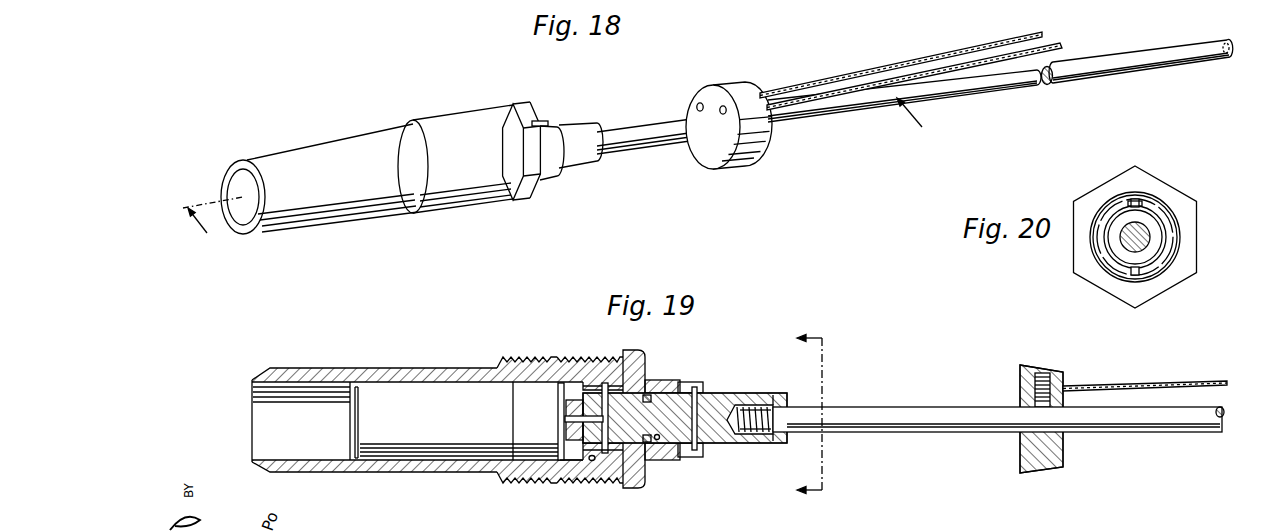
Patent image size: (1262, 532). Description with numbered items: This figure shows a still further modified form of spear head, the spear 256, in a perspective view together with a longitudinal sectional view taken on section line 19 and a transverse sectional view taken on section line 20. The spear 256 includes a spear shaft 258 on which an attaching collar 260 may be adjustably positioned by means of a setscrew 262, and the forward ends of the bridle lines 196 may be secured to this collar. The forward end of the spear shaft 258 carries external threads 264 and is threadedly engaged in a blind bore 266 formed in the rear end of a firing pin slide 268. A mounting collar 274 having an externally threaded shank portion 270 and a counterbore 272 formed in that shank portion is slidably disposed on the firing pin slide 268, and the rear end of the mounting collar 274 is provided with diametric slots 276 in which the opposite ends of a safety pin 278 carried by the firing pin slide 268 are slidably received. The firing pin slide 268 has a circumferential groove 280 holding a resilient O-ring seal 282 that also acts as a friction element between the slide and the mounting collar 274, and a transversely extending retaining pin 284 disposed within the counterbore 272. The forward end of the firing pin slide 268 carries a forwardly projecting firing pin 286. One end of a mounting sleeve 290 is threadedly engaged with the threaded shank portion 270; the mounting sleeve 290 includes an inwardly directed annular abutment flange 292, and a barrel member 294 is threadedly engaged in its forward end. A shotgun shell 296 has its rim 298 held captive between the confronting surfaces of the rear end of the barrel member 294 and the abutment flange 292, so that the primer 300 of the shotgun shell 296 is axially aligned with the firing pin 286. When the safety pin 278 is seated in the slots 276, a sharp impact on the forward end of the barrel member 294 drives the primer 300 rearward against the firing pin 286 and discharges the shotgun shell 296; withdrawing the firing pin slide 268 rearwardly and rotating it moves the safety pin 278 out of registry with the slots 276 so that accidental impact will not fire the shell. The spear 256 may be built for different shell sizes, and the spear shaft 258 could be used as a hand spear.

In FIG. 18, the section line 19 is at (565, 178).
In FIG. 19, the section line 20 is at (831, 415).
In FIG. 18, the bridle lines 196 is at (833, 88).
In FIG. 19, the bridle lines 196 is at (1142, 386).
In FIG. 18, the spear 256 is at (630, 113).
In FIG. 18, the spear shaft 258 is at (823, 115).
In FIG. 19, the spear shaft 258 is at (943, 426).
In FIG. 20, the spear shaft 258 is at (1125, 245).
In FIG. 18, the attaching collar 260 is at (722, 160).
In FIG. 19, the attaching collar 260 is at (1037, 466).
In FIG. 18, the setscrew 262 is at (737, 83).
In FIG. 19, the setscrew 262 is at (1037, 373).
In FIG. 19, the external threads 264 is at (753, 440).
In FIG. 19, the blind bore 266 is at (750, 405).
In FIG. 18, the firing pin slide 268 is at (575, 130).
In FIG. 19, the firing pin slide 268 is at (717, 400).
In FIG. 20, the firing pin slide 268 is at (1153, 255).
In FIG. 19, the externally threaded shank portion 270 is at (585, 368).
In FIG. 19, the counterbore 272 is at (590, 460).
In FIG. 18, the mounting collar 274 is at (543, 175).
In FIG. 19, the mounting collar 274 is at (655, 380).
In FIG. 20, the mounting collar 274 is at (1167, 240).
In FIG. 18, the diametric slots 276 is at (543, 121).
In FIG. 19, the diametric slots 276 is at (682, 383).
In FIG. 20, the diametric slots 276 is at (1143, 203).
In FIG. 19, the safety pin 278 is at (697, 452).
In FIG. 20, the safety pin 278 is at (1125, 200).
In FIG. 19, the circumferential groove 280 is at (658, 439).
In FIG. 19, the O-ring seal 282 is at (647, 443).
In FIG. 19, the retaining pin 284 is at (606, 382).
In FIG. 19, the firing pin 286 is at (567, 460).
In FIG. 18, the mounting sleeve 290 is at (457, 202).
In FIG. 19, the mounting sleeve 290 is at (517, 358).
In FIG. 19, the abutment flange 292 is at (560, 474).
In FIG. 18, the barrel member 294 is at (343, 214).
In FIG. 19, the barrel member 294 is at (440, 468).
In FIG. 19, the shotgun shell 296 is at (393, 447).
In FIG. 19, the rim 298 is at (558, 440).
In FIG. 19, the primer 300 is at (558, 403).